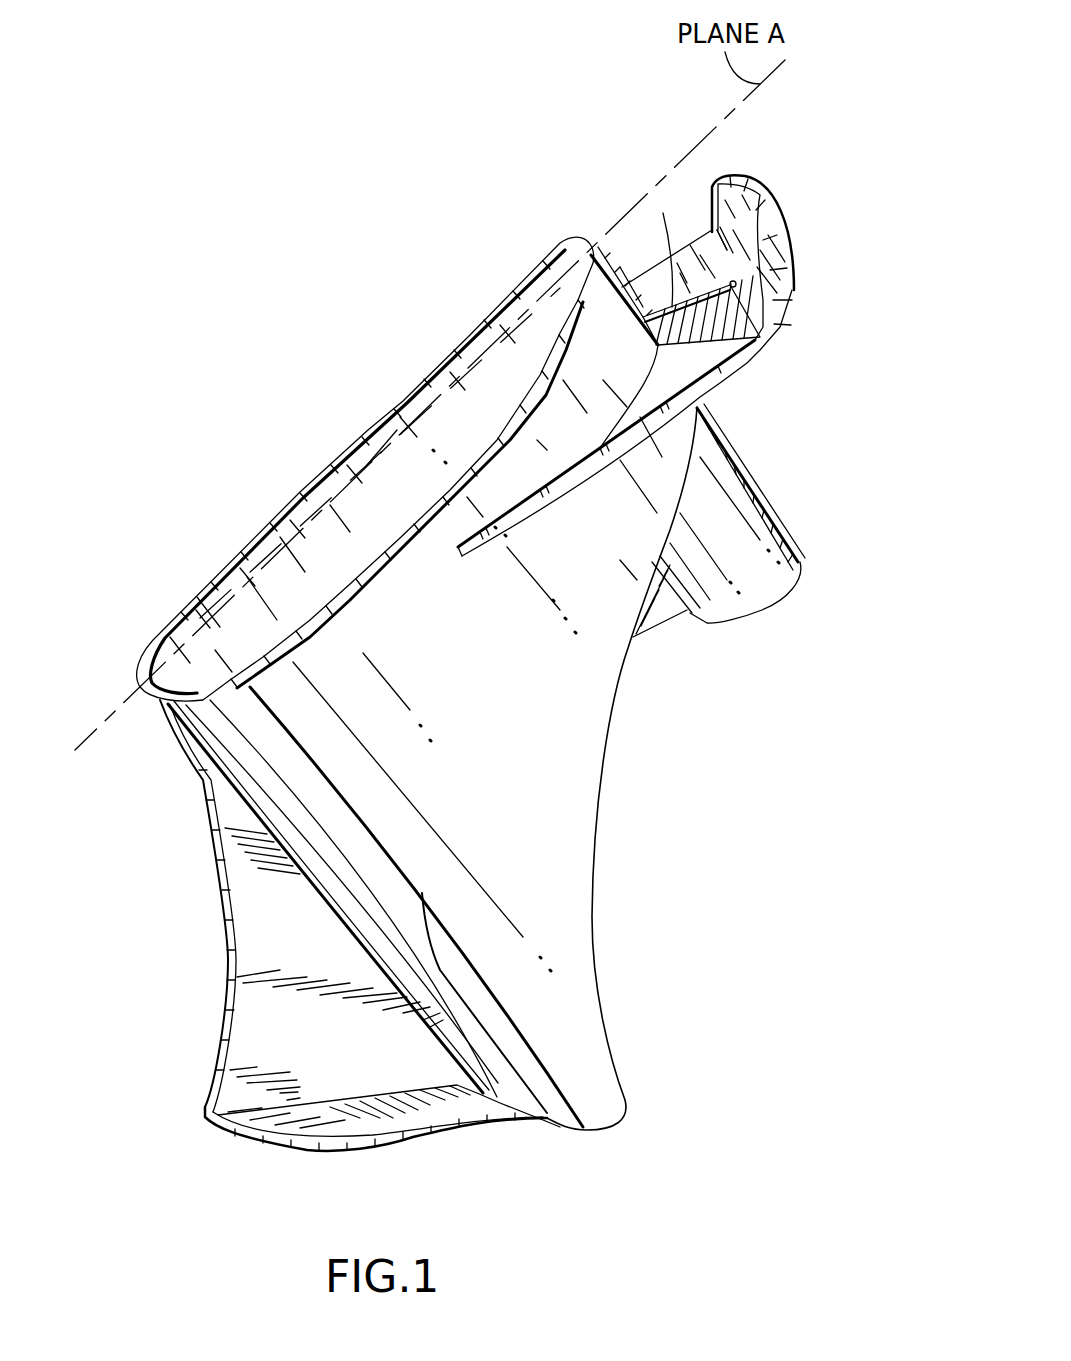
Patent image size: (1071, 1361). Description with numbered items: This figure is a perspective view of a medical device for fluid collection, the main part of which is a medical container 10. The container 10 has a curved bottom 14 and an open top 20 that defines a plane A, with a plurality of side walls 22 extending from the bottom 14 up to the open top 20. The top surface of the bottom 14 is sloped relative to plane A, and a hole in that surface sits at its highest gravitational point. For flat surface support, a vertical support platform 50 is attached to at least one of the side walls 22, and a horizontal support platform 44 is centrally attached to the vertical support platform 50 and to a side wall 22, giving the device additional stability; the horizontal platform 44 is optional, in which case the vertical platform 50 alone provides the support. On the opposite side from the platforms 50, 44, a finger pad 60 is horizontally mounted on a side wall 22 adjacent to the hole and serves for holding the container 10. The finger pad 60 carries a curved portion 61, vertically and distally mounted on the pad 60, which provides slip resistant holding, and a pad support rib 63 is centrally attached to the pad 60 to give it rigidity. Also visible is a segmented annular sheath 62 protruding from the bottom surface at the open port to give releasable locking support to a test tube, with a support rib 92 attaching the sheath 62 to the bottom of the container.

The medical container 10 is at (470, 208).
The curved bottom 14 is at (603, 777).
The open top 20 is at (248, 540).
The side walls 22 is at (317, 703).
The horizontal support platform 44 is at (363, 1117).
The vertical support platform 50 is at (248, 1013).
The finger pad 60 is at (688, 254).
The curved portion 61 is at (748, 190).
The segmented annular sheath 62 is at (773, 563).
The pad support rib 63 is at (670, 282).
The support rib 92 is at (660, 615).